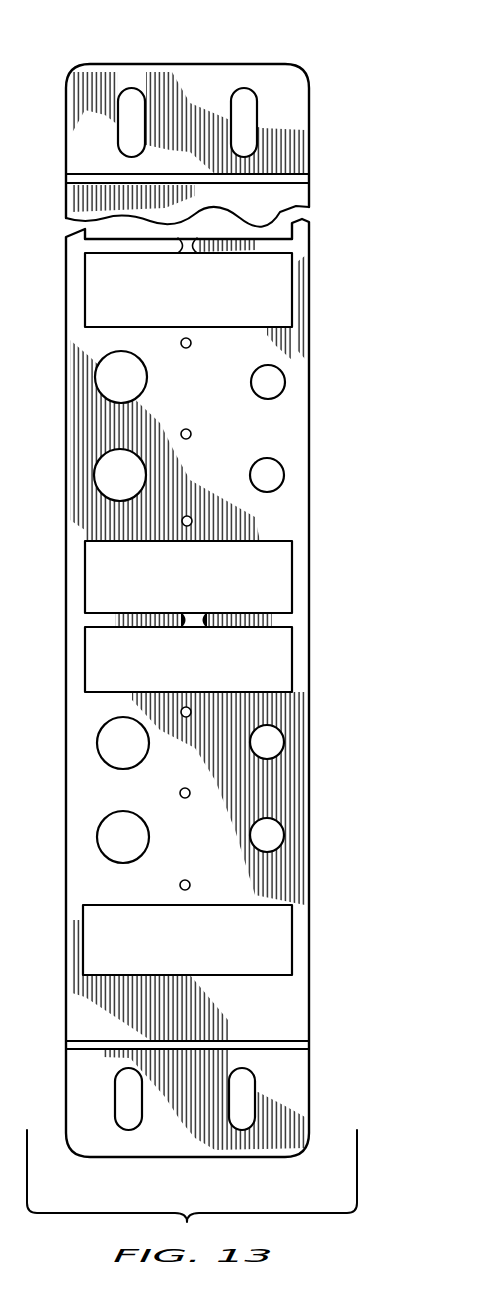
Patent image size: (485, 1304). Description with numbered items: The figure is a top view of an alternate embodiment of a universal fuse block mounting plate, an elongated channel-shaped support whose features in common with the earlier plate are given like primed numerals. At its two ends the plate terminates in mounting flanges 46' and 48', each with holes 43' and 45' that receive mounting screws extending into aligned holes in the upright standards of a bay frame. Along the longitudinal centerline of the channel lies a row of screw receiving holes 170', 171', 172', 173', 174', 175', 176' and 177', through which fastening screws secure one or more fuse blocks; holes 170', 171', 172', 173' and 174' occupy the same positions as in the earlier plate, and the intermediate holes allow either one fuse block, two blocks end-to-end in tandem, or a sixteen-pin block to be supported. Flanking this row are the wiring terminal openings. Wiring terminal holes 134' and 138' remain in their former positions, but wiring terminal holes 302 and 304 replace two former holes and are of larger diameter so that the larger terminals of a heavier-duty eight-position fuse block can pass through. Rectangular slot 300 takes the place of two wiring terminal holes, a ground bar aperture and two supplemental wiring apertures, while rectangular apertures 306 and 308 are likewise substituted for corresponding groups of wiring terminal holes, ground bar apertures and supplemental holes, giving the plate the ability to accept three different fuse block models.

The holes 43' is at (187, 93).
The holes 45' is at (185, 1128).
The mounting flange 46' is at (188, 129).
The mounting flange 48' is at (207, 688).
The screw receiving hole 177' is at (210, 266).
The screw receiving hole 176' is at (212, 347).
The screw receiving hole 175' is at (213, 424).
The screw receiving hole 174' is at (213, 511).
The screw receiving hole 173' is at (216, 599).
The screw receiving hole 172' is at (212, 692).
The screw receiving hole 171' is at (203, 776).
The screw receiving hole 170' is at (212, 877).
The rectangular aperture 308 is at (290, 578).
The rectangular aperture 306 is at (290, 658).
The rectangular slot 300 is at (288, 943).
The wiring terminal hole 304 is at (121, 757).
The wiring terminal hole 302 is at (125, 853).
The wiring terminal hole 138' is at (307, 734).
The wiring terminal hole 134' is at (307, 833).